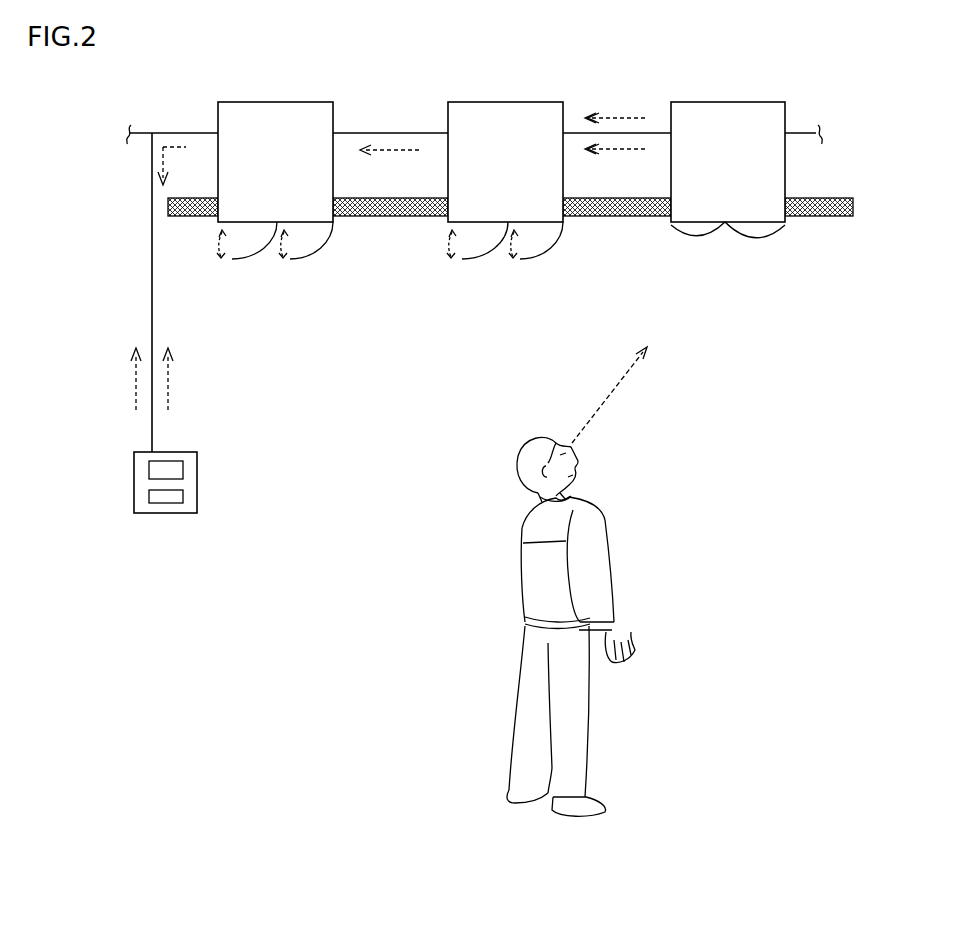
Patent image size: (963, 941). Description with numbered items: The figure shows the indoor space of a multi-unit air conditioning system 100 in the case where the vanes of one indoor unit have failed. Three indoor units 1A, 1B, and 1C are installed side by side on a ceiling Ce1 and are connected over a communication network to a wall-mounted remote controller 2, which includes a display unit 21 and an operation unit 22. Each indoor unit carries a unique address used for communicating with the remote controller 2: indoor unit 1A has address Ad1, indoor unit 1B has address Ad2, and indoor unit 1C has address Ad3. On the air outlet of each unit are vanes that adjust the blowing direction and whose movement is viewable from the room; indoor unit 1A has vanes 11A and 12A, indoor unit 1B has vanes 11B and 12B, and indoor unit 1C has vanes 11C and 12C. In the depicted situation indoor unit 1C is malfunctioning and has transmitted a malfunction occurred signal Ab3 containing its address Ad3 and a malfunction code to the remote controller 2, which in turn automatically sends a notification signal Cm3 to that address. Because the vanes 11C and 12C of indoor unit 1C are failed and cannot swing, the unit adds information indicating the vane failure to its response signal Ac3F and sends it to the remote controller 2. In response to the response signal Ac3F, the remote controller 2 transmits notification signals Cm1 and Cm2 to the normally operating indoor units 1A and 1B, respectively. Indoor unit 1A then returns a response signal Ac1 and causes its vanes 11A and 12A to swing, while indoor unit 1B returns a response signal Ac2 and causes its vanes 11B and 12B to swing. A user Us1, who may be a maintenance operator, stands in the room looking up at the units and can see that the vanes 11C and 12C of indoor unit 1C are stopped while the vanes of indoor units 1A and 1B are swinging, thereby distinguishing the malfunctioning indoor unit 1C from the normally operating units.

The multi-unit air conditioning system 100 is at (97, 80).
The indoor unit 1A is at (291, 101).
The indoor unit 1B is at (521, 101).
The indoor unit 1C is at (743, 101).
The address Ad1 is at (277, 197).
The address Ad2 is at (506, 197).
The address Ad3 is at (731, 197).
The vane 11A is at (251, 260).
The vane 12A is at (311, 260).
The vane 11B is at (481, 260).
The vane 12B is at (541, 260).
The vane 11C is at (700, 239).
The vane 12C is at (760, 240).
The response signal Ac1 is at (186, 147).
The response signal Ac2 is at (398, 153).
The response signal Ac3F is at (623, 153).
The malfunction occurred signal Ab3 is at (624, 115).
The ceiling Ce1 is at (826, 218).
The remote controller 2 is at (190, 506).
The display unit 21 is at (183, 470).
The operation unit 22 is at (183, 496).
The notification signal Cm1 is at (171, 390).
The notification signal Cm2 is at (230, 379).
The notification signal Cm3 is at (132, 390).
The user Us1 is at (606, 543).